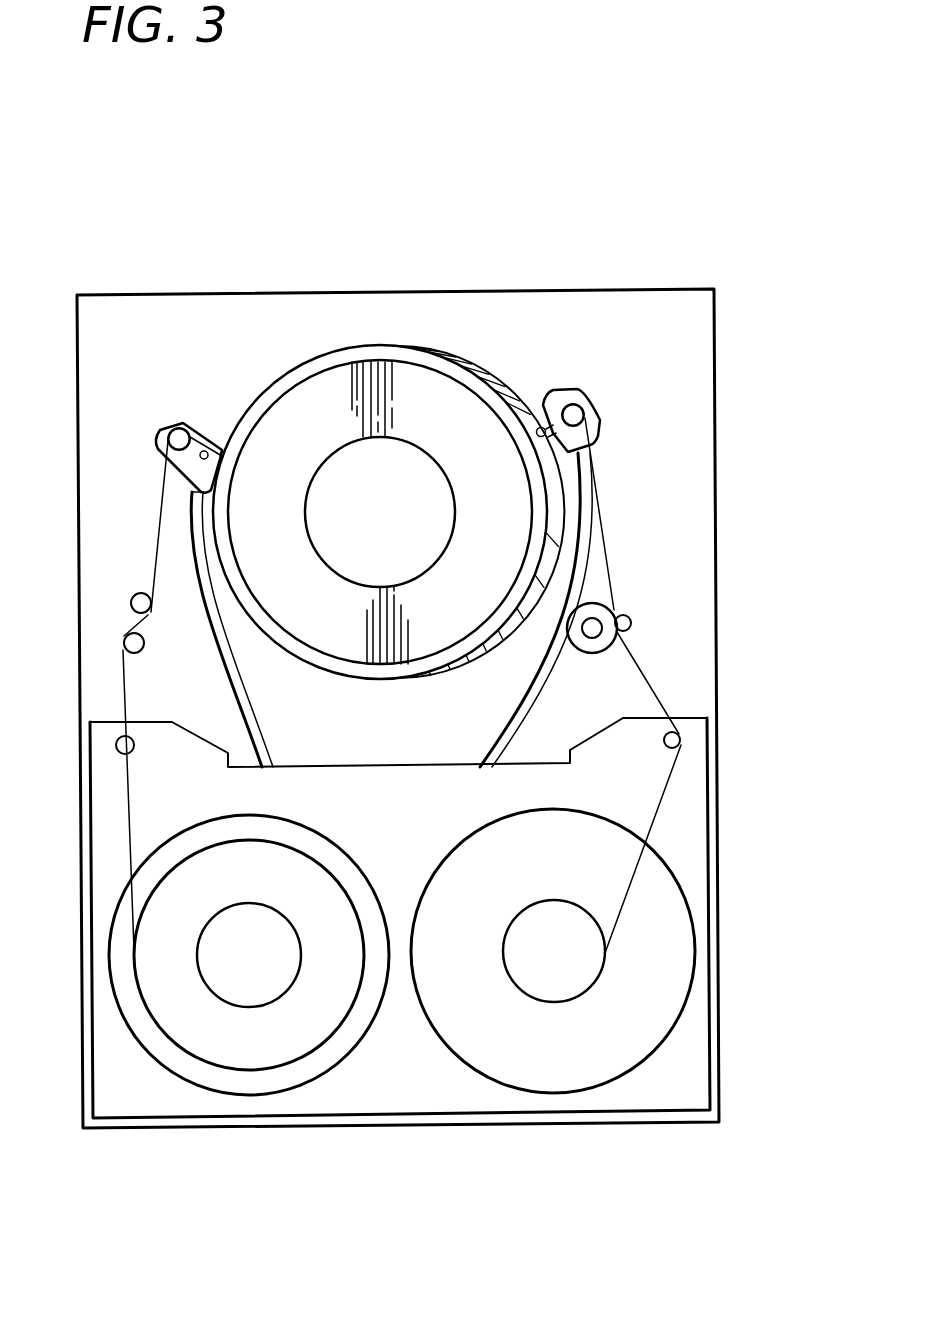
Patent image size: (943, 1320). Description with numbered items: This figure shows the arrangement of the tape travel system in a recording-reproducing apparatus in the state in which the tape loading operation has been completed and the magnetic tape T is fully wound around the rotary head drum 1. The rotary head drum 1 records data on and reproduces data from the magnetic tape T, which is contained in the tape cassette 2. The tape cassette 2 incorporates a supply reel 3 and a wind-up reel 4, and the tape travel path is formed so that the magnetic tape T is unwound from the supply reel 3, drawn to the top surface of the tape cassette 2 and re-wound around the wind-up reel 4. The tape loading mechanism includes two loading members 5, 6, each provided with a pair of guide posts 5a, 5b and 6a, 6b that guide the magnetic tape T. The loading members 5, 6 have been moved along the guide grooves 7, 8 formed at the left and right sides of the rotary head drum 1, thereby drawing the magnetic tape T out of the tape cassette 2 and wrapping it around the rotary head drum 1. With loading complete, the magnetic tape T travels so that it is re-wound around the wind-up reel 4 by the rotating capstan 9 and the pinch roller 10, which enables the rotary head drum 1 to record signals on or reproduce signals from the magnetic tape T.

The rotary head drum 1 is at (331, 375).
The tape cassette 2 is at (402, 1100).
The supply reel 3 is at (251, 1090).
The wind-up reel 4 is at (554, 1088).
The loading member 5 is at (126, 351).
The guide post 5a is at (178, 430).
The guide post 5b is at (205, 451).
The loading member 6 is at (665, 328).
The guide post 6a is at (575, 410).
The guide post 6b is at (542, 428).
The guide groove 7 is at (195, 548).
The guide groove 8 is at (585, 485).
The capstan 9 is at (632, 622).
The pinch roller 10 is at (604, 611).
The magnetic tape T is at (553, 535).